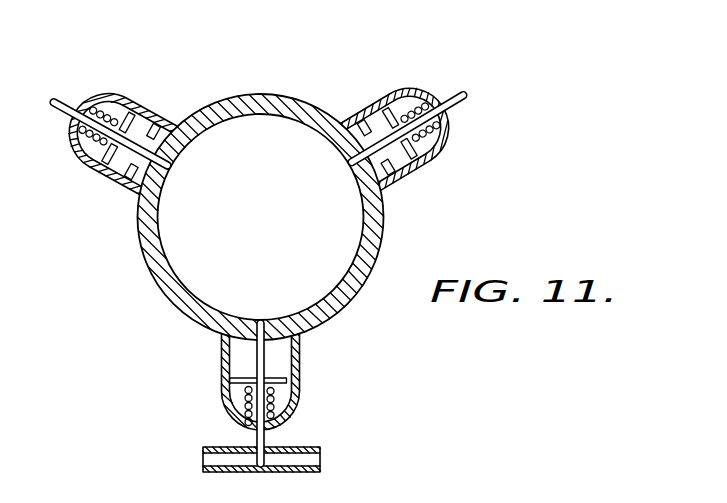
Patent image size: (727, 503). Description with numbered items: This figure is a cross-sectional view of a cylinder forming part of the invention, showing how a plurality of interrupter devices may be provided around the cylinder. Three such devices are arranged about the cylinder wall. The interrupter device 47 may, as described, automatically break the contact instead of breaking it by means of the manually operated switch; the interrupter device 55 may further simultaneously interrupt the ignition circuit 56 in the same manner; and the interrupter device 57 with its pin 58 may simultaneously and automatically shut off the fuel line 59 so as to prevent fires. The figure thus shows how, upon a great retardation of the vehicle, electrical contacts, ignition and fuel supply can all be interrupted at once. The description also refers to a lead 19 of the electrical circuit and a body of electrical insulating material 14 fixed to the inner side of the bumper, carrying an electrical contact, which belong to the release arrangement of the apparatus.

The body of electrical insulating material 14 is at (118, 181).
The lead 19 is at (150, 126).
The interrupter device 47 is at (101, 93).
The interrupter device 55 is at (427, 93).
The ignition circuit 56 is at (358, 113).
The interrupter device 57 is at (220, 405).
The pin 58 is at (262, 442).
The fuel line 59 is at (313, 462).